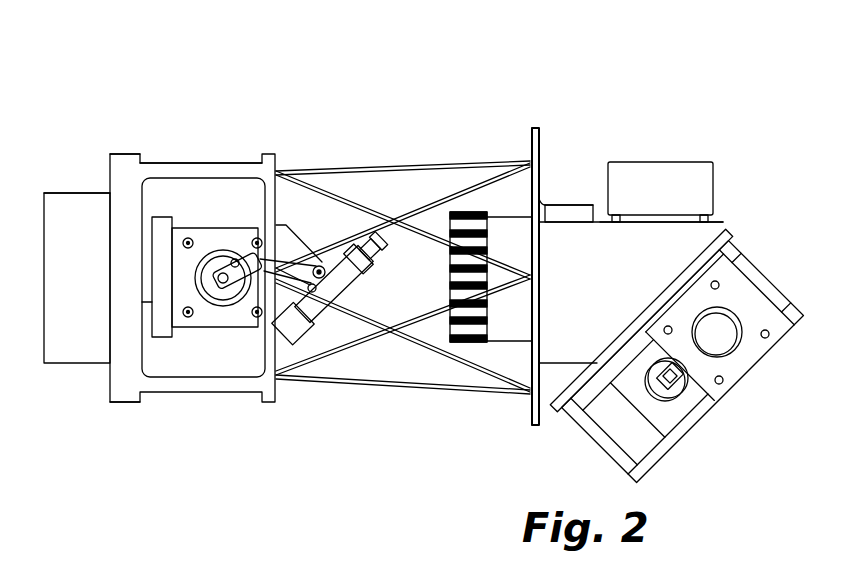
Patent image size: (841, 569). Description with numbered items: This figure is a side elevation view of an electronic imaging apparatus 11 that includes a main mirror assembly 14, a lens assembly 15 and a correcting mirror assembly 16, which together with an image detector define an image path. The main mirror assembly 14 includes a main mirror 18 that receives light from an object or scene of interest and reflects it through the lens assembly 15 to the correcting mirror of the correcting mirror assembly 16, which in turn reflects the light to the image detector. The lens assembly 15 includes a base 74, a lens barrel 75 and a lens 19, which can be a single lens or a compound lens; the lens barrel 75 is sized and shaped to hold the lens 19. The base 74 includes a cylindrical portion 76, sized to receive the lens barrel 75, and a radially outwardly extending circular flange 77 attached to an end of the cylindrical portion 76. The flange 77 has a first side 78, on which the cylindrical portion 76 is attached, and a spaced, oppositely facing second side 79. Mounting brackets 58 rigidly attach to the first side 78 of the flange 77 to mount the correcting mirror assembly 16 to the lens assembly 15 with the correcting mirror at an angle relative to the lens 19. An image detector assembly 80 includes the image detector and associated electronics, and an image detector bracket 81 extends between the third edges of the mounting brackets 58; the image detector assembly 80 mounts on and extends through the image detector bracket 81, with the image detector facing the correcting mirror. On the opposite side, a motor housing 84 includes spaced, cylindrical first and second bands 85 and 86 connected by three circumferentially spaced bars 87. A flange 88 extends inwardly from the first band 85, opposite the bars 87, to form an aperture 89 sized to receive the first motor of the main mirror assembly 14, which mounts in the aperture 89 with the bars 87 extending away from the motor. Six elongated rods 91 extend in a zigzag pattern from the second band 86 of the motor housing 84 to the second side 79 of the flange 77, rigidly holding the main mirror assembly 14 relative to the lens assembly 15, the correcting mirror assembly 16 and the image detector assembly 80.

The electronic imaging apparatus 11 is at (388, 83).
The main mirror assembly 14 is at (88, 345).
The lens assembly 15 is at (510, 230).
The correcting mirror assembly 16 is at (737, 363).
The main mirror 18 is at (305, 323).
The lens 19 is at (448, 278).
The mounting brackets 58 is at (723, 223).
The base 74 is at (597, 203).
The lens barrel 75 is at (508, 327).
The cylindrical portion 76 is at (563, 203).
The flange 77 is at (537, 128).
The first side 78 is at (540, 150).
The second side 79 is at (531, 138).
The image detector assembly 80 is at (643, 193).
The image detector bracket 81 is at (705, 219).
The motor housing 84 is at (124, 388).
The first band 85 is at (130, 170).
The second band 86 is at (281, 160).
The bars 87 is at (208, 170).
The flange 88 is at (110, 167).
The aperture 89 is at (110, 190).
The elongated rods 91 is at (447, 397).